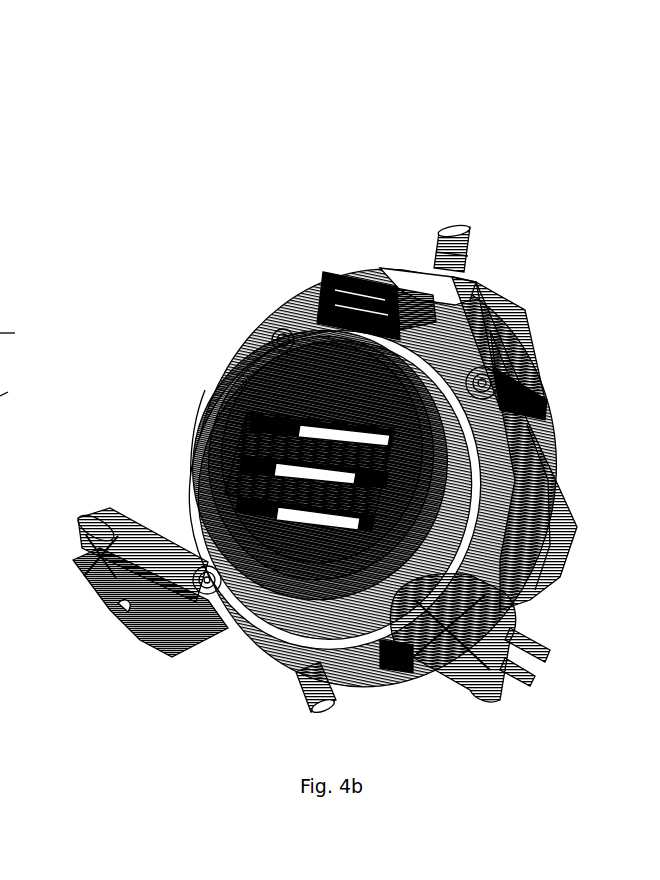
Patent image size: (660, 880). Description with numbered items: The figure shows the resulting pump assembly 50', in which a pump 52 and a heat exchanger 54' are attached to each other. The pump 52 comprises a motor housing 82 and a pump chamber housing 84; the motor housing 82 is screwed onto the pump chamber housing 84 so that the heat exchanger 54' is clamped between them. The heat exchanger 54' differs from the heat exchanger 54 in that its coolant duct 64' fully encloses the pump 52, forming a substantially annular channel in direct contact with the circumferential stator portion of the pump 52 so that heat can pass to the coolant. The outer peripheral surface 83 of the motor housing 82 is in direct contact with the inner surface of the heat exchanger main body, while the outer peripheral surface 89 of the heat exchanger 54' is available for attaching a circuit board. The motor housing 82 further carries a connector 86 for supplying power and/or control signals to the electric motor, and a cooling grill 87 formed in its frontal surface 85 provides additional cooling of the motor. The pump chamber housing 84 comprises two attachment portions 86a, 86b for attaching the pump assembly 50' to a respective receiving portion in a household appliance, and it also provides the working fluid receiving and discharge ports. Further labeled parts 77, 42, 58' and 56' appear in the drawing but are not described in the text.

The pump assembly 50' is at (374, 378).
The pump 52 is at (188, 438).
The heat exchanger 54 is at (560, 313).
The heat exchanger 54' is at (98, 400).
The housing element 77 is at (21, 334).
The component 42 is at (10, 440).
The motor housing 82 is at (255, 368).
The outer peripheral surface 83 is at (490, 470).
The pump chamber housing 84 is at (553, 433).
The frontal surface 85 is at (215, 402).
The connector 86 is at (358, 270).
The attachment portion 86a is at (133, 612).
The attachment portion 86b is at (497, 703).
The cooling grill 87 is at (220, 598).
The outer peripheral surface 89 is at (475, 305).
The connection pipe 58' is at (483, 227).
The connection pipe 56' is at (248, 713).
The coolant duct 64' is at (106, 562).